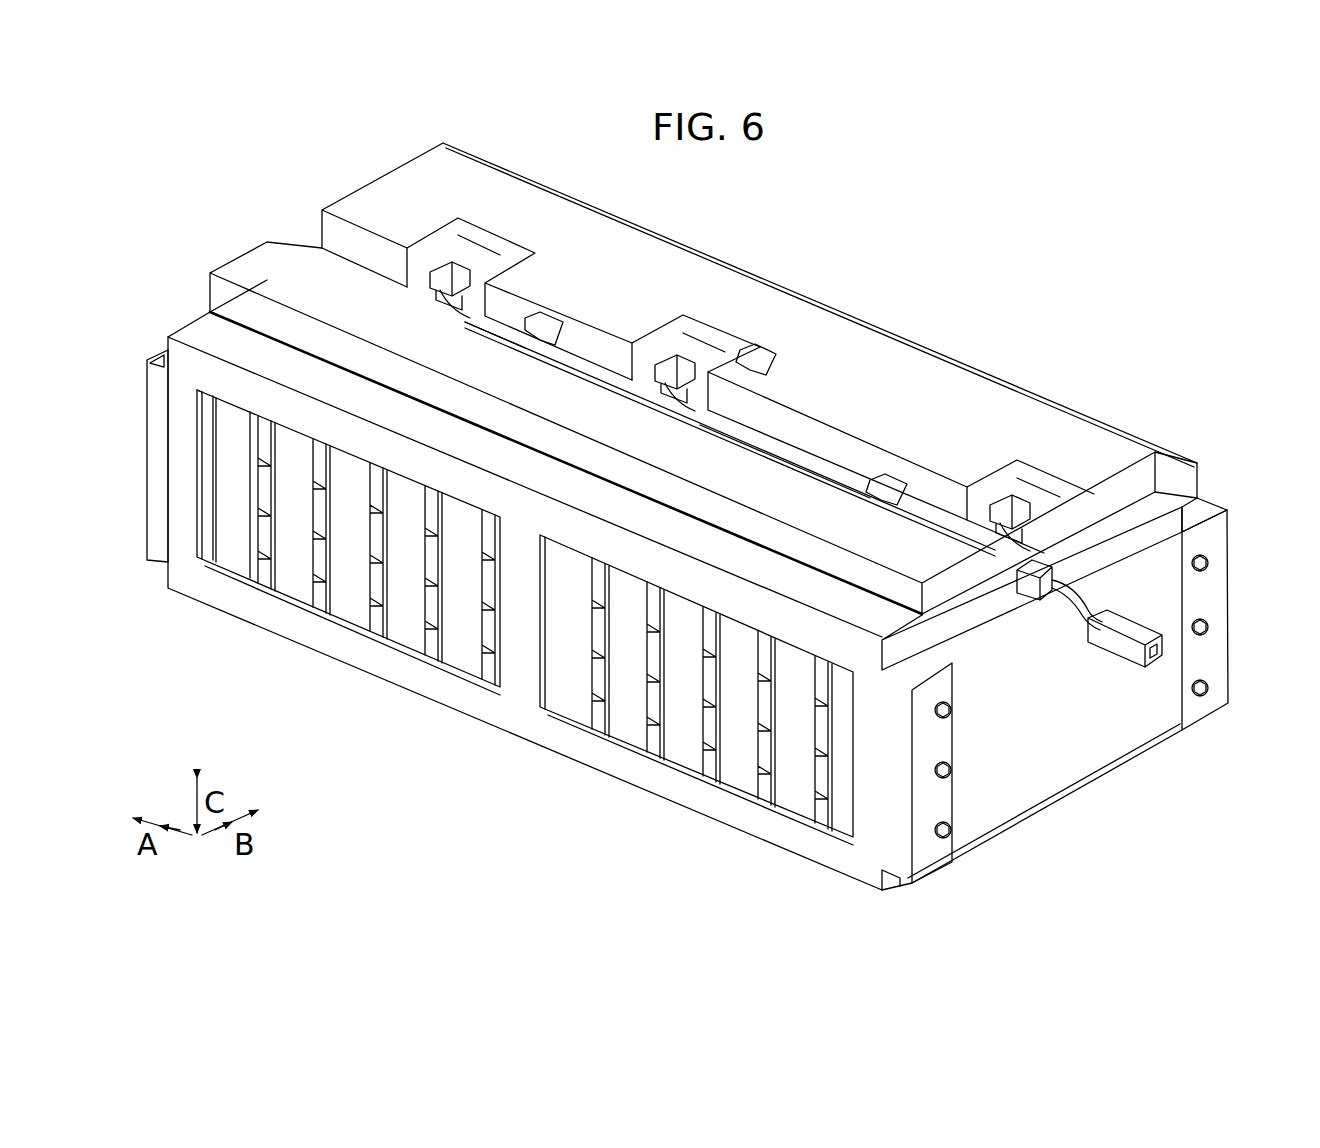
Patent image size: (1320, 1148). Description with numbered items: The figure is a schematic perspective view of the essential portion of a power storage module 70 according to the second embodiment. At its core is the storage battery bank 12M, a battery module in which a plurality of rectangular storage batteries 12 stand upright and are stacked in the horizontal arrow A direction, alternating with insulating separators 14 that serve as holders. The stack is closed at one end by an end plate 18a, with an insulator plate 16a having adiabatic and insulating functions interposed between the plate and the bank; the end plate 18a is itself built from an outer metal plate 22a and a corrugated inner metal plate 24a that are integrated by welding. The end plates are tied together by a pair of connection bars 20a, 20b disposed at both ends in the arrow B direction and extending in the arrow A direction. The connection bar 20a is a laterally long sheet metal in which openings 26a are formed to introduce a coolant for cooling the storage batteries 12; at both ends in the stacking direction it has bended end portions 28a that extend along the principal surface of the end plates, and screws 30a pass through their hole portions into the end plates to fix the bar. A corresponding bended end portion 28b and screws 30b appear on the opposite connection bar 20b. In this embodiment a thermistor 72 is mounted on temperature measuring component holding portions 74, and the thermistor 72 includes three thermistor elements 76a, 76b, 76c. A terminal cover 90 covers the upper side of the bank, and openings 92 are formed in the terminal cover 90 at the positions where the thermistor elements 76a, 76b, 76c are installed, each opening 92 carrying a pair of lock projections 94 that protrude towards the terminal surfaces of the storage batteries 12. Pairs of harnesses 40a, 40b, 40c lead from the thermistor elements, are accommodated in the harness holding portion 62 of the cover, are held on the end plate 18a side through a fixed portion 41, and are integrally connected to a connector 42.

The power storage module 70 is at (1098, 284).
The terminal cover 90 is at (330, 196).
The thermistor element 76a is at (432, 290).
The thermistor element 76b is at (655, 388).
The thermistor element 76c is at (999, 520).
The thermistor 72 is at (443, 266).
The temperature measuring component holding portion 74 is at (470, 244).
The opening 92 is at (472, 262).
The lock projection 94 is at (463, 298).
The harness holding portion 62 is at (840, 470).
The harness 40a is at (508, 338).
The harness 40b is at (791, 457).
The harness 40c is at (1086, 612).
The fixed portion 41 is at (1028, 598).
The connector 42 is at (1130, 653).
The storage battery 12 is at (728, 750).
The storage battery bank 12M is at (712, 866).
The separator 14 is at (372, 540).
The insulator plate 16a is at (1132, 500).
The end plate 18a is at (1242, 402).
The inner metal plate 24a is at (1181, 494).
The outer metal plate 22a is at (1218, 511).
The connection bar 20a is at (466, 714).
The connection bar 20b is at (1231, 512).
The opening 26a is at (204, 540).
The bended end portion 28a is at (159, 356).
The right end plate 28b is at (1226, 591).
The screw 30a is at (952, 831).
The bolt 30b is at (1205, 694).